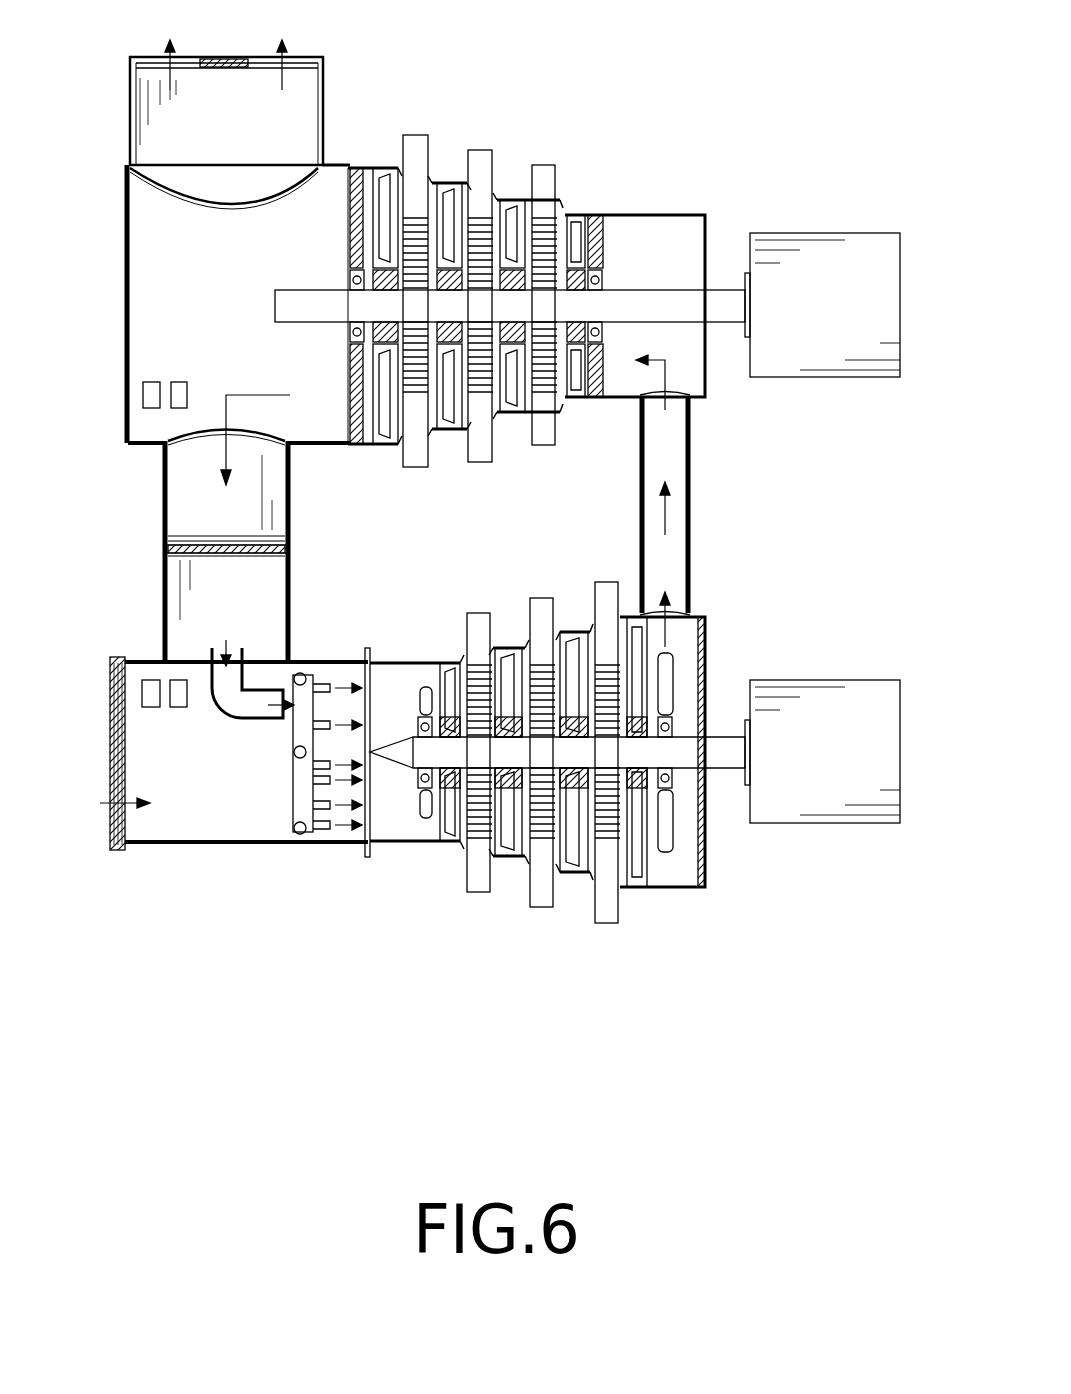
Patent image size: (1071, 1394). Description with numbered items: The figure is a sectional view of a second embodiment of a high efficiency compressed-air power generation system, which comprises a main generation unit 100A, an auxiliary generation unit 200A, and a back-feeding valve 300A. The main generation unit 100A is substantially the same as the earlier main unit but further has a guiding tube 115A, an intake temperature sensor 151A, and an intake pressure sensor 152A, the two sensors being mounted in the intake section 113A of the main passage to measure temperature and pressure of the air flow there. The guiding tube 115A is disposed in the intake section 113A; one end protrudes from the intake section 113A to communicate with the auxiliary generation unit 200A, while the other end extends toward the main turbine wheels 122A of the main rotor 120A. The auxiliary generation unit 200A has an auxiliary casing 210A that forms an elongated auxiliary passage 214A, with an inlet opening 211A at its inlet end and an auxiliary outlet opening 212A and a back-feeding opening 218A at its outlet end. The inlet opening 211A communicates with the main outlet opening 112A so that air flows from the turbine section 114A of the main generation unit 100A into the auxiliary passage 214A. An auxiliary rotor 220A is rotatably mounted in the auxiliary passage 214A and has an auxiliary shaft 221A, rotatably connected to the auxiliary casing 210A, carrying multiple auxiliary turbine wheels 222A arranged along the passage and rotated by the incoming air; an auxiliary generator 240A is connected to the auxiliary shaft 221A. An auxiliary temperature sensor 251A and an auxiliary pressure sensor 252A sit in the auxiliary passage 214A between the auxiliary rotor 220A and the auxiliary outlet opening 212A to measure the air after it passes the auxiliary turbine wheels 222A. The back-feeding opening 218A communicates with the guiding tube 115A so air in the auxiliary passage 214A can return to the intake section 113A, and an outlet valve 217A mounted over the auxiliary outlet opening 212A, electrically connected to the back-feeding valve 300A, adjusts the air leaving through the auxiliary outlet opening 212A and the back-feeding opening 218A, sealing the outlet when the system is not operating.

The auxiliary generation unit 200A is at (725, 65).
The outlet valve 217A is at (163, 55).
The auxiliary outlet opening 212A is at (275, 170).
The auxiliary passage 214A is at (310, 370).
The auxiliary pressure sensor 252A is at (152, 380).
The auxiliary temperature sensor 251A is at (180, 380).
The auxiliary rotor 220A is at (612, 240).
The auxiliary turbine wheels 222A is at (577, 230).
The auxiliary shaft 221A is at (720, 298).
The auxiliary generator 240A is at (840, 365).
The inlet opening 211A is at (680, 405).
The auxiliary casing 210A is at (372, 450).
The back-feeding opening 218A is at (193, 445).
The back-feeding valve 300A is at (190, 555).
The main outlet opening 112A is at (680, 610).
The main generation unit 100A is at (400, 905).
The intake section 113A is at (283, 790).
The intake temperature sensor 151A is at (150, 710).
The intake pressure sensor 152A is at (178, 710).
The guiding tube 115A is at (220, 710).
The main rotor 120A is at (670, 862).
The main turbine wheels 122A is at (640, 868).
The turbine section 114A is at (572, 865).